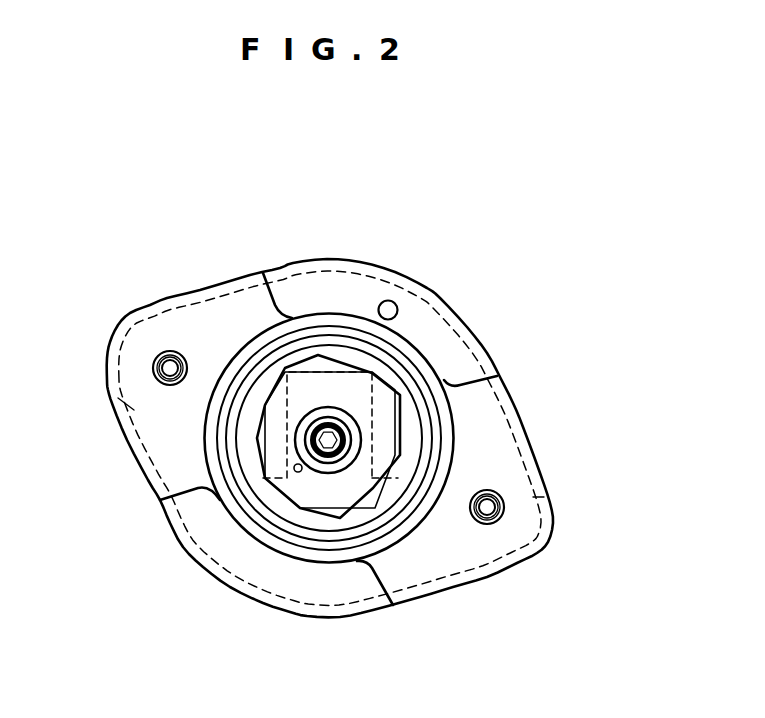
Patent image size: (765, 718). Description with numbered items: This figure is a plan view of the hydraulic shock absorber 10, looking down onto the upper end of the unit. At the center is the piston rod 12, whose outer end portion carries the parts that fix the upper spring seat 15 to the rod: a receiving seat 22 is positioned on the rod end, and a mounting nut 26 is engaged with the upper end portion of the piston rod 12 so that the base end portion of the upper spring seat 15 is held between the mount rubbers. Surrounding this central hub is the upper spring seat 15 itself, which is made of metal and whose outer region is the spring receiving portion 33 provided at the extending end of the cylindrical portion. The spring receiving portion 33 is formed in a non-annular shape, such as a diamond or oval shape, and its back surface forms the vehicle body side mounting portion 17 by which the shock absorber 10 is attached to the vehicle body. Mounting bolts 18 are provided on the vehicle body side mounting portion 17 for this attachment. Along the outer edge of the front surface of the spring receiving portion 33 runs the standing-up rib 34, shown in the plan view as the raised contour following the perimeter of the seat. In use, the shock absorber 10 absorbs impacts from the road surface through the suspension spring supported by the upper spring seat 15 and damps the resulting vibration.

The hydraulic shock absorber 10 is at (117, 237).
The piston rod 12 is at (345, 441).
The upper spring seat 15 is at (186, 460).
The vehicle body side mounting portion 17 is at (548, 494).
The mounting bolt 18 is at (504, 513).
The receiving seat 22 is at (350, 488).
The mounting nut 26 is at (345, 458).
The spring receiving portion 33 is at (126, 404).
The standing-up rib 34 is at (102, 357).